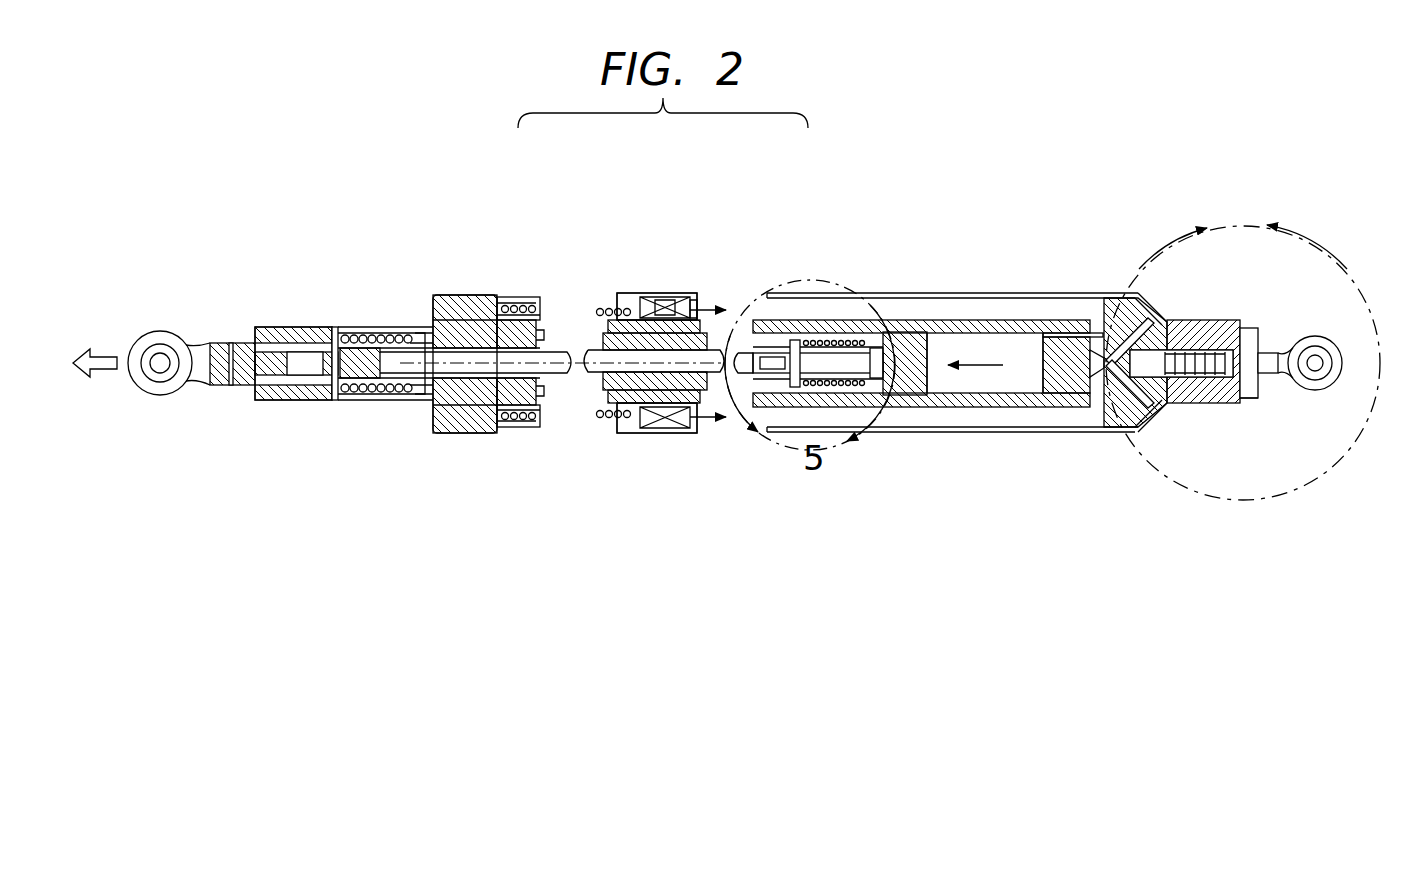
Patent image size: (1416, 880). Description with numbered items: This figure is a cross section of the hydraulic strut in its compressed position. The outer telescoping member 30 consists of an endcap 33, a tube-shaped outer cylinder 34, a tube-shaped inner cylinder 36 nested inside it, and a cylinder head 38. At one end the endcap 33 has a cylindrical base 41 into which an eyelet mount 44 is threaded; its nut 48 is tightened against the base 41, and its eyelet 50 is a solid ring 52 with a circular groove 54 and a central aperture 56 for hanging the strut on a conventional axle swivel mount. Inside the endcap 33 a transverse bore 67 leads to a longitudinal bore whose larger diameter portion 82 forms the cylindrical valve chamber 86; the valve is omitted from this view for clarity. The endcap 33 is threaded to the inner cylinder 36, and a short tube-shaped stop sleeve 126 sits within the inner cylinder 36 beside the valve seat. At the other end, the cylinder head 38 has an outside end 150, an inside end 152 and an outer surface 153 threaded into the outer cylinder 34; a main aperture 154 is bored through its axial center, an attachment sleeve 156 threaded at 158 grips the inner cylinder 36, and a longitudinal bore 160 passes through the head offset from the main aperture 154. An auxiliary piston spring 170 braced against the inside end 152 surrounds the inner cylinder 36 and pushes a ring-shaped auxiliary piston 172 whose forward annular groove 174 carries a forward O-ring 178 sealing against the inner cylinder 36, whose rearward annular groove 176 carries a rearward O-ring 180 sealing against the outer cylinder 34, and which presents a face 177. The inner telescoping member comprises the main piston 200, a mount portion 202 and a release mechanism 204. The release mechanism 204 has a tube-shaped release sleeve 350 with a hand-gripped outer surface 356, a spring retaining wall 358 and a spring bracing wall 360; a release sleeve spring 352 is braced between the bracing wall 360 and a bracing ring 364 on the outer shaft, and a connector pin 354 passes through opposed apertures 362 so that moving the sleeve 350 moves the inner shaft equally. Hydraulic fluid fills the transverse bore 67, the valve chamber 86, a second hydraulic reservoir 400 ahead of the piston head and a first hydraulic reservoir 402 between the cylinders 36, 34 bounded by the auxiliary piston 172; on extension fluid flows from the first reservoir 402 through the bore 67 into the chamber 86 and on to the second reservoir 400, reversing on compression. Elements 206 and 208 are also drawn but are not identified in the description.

The outer telescoping member 30 is at (993, 278).
The endcap 33 is at (1203, 457).
The outer cylinder 34 is at (957, 293).
The inner cylinder 36 is at (913, 320).
The cylinder head 38 is at (457, 297).
The base 41 is at (1193, 322).
The eyelet mount 44 is at (1248, 340).
The nut 48 is at (1250, 398).
The eyelet 50 is at (1277, 353).
The solid ring 52 is at (1316, 336).
The circular groove 54 is at (1333, 355).
The aperture 56 is at (1318, 373).
The transverse bore 67 is at (1112, 330).
The larger diameter portion 82 is at (1055, 320).
The valve chamber 86 is at (1050, 370).
The stop sleeve 126 is at (980, 407).
The outside end 150 is at (434, 430).
The inside end 152 is at (510, 430).
The outer surface 153 is at (467, 433).
The main aperture 154 is at (420, 403).
The attachment sleeve 156 is at (507, 298).
The threads 158 is at (543, 297).
The longitudinal bore 160 is at (463, 298).
The auxiliary piston spring 170 is at (533, 430).
The auxiliary piston 172 is at (663, 296).
The forward annular groove 174 is at (673, 296).
The rearward annular groove 176 is at (647, 296).
The face 177 is at (705, 296).
The forward auxiliary piston O-ring 178 is at (673, 296).
The rearward auxiliary piston O-ring 180 is at (647, 296).
The main piston 200 is at (643, 365).
The mount portion 202 is at (126, 328).
The release mechanism 204 is at (297, 327).
The valve body 206 is at (831, 358).
The shaft 208 is at (208, 345).
The release sleeve 350 is at (270, 402).
The release sleeve spring 352 is at (365, 403).
The connector pin 354 is at (333, 327).
The outer surface 356 is at (268, 327).
The spring retaining wall 358 is at (392, 330).
The spring bracing wall 360 is at (362, 327).
The apertures 362 is at (333, 403).
The bracing ring 364 is at (406, 345).
The second hydraulic reservoir 400 is at (943, 385).
The first hydraulic reservoir 402 is at (797, 415).